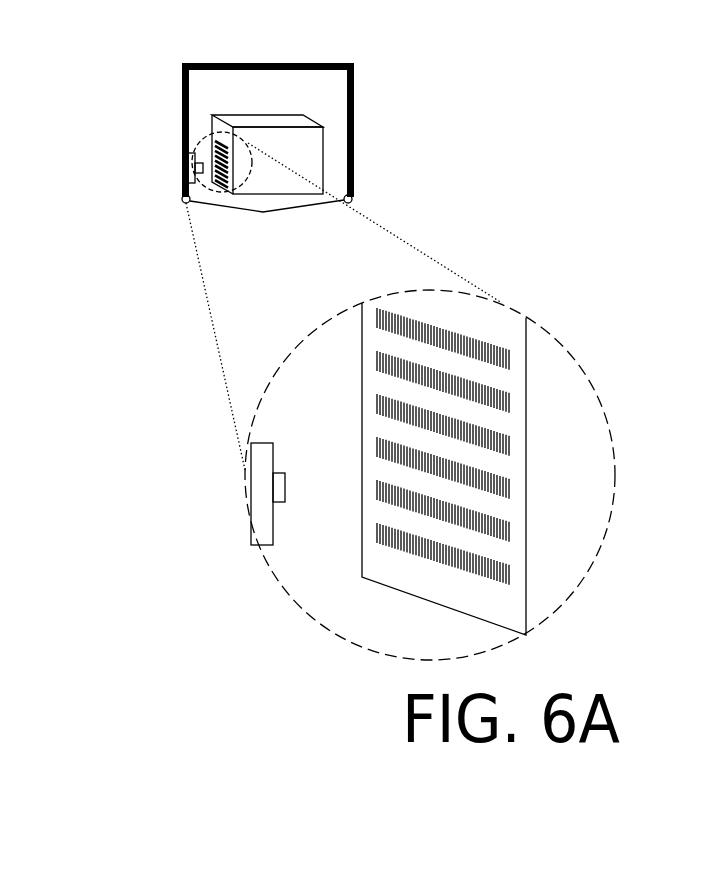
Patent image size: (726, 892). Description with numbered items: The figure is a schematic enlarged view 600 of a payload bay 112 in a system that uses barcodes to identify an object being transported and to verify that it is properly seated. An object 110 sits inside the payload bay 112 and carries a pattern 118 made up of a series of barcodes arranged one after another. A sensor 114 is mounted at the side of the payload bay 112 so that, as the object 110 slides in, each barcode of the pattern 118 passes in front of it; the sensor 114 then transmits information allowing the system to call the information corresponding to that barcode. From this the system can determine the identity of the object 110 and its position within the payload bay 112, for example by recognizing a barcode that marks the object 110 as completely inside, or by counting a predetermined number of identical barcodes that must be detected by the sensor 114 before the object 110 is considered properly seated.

The enlarged view 600 is at (620, 36).
The payload bay 112 is at (360, 107).
The object 110 is at (480, 296).
The pattern 118 is at (378, 383).
The sensor 114 is at (255, 540).